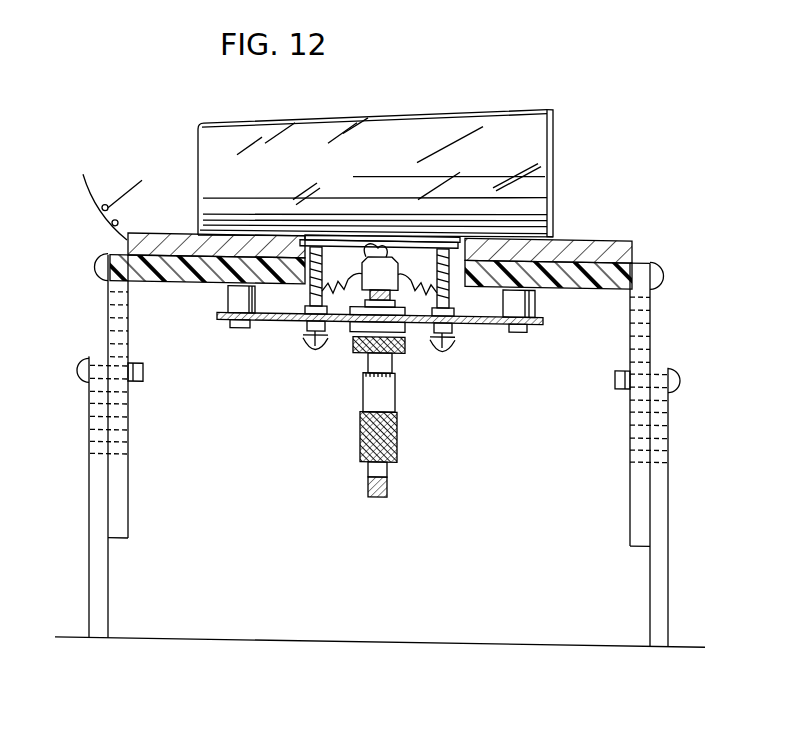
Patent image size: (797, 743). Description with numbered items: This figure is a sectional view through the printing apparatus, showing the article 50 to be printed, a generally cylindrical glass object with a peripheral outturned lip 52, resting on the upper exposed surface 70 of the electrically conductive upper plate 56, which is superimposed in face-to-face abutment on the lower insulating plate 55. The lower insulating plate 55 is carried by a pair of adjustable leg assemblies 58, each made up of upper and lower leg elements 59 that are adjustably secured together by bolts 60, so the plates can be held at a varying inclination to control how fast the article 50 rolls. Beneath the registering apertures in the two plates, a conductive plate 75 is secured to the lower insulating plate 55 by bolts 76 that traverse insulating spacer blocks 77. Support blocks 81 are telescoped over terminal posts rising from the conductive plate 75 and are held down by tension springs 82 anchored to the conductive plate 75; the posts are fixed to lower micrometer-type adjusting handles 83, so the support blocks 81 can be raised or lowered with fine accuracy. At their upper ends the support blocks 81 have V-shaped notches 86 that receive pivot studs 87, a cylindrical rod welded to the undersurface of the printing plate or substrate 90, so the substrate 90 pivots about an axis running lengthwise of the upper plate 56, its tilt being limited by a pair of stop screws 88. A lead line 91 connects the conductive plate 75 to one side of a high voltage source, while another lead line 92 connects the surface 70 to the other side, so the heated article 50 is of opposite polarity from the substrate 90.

The article 50 is at (486, 93).
The peripheral outturned lip 52 is at (557, 147).
The lower insulating plate 55 is at (610, 262).
The upper plate 56 is at (588, 231).
The adjustable leg assemblies 58 is at (87, 456).
The leg elements 59 is at (105, 306).
The bolts 60 is at (80, 365).
The upper exposed surface 70 is at (569, 225).
The conductive plate 75 is at (545, 315).
The bolts 76 is at (238, 328).
The insulating spacer blocks 77 is at (237, 297).
The support blocks 81 is at (391, 281).
The tension springs 82 is at (305, 312).
The micrometer-type adjusting handles 83 is at (357, 435).
The V-shaped notches 86 is at (378, 232).
The pivot studs 87 is at (393, 236).
The stop screws 88 is at (311, 350).
The printing plate or substrate 90 is at (359, 226).
The lead line 91 is at (203, 348).
The lead line 92 is at (112, 200).